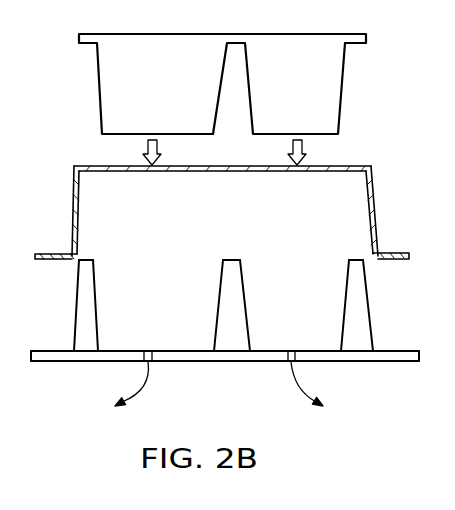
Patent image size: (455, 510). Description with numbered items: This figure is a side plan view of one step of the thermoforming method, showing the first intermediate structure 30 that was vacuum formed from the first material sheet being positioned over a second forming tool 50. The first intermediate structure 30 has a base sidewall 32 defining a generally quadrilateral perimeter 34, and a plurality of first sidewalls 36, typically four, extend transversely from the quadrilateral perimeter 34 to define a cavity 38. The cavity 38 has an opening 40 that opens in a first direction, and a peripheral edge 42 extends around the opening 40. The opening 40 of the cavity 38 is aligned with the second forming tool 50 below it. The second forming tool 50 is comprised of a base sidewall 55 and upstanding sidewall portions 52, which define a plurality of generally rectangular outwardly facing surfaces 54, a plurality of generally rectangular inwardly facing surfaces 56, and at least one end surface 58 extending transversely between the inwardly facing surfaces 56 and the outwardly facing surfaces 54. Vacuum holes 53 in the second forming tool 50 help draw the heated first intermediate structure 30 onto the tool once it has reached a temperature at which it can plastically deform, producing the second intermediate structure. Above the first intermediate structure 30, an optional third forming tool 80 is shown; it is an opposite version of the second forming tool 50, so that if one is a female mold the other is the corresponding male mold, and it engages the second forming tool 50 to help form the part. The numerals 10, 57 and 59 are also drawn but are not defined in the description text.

The container system 10 is at (443, 498).
The first intermediate structure 30 is at (228, 208).
The base sidewall 32 is at (228, 208).
The quadrilateral perimeter 34 is at (75, 167).
The first sidewalls 36 is at (72, 207).
The cavity 38 is at (315, 203).
The opening 40 is at (374, 267).
The peripheral edge 42 is at (74, 262).
The second forming tool 50 is at (361, 368).
The sidewall portions 52 is at (223, 267).
The vacuum holes 53 is at (293, 362).
The outwardly facing surfaces 54 is at (77, 305).
The base sidewall 55 is at (313, 349).
The inwardly facing surfaces 56 is at (97, 346).
The left channel 57 is at (166, 262).
The end surface 58 is at (86, 258).
The right channel 59 is at (275, 290).
The third forming tool 80 is at (315, 65).